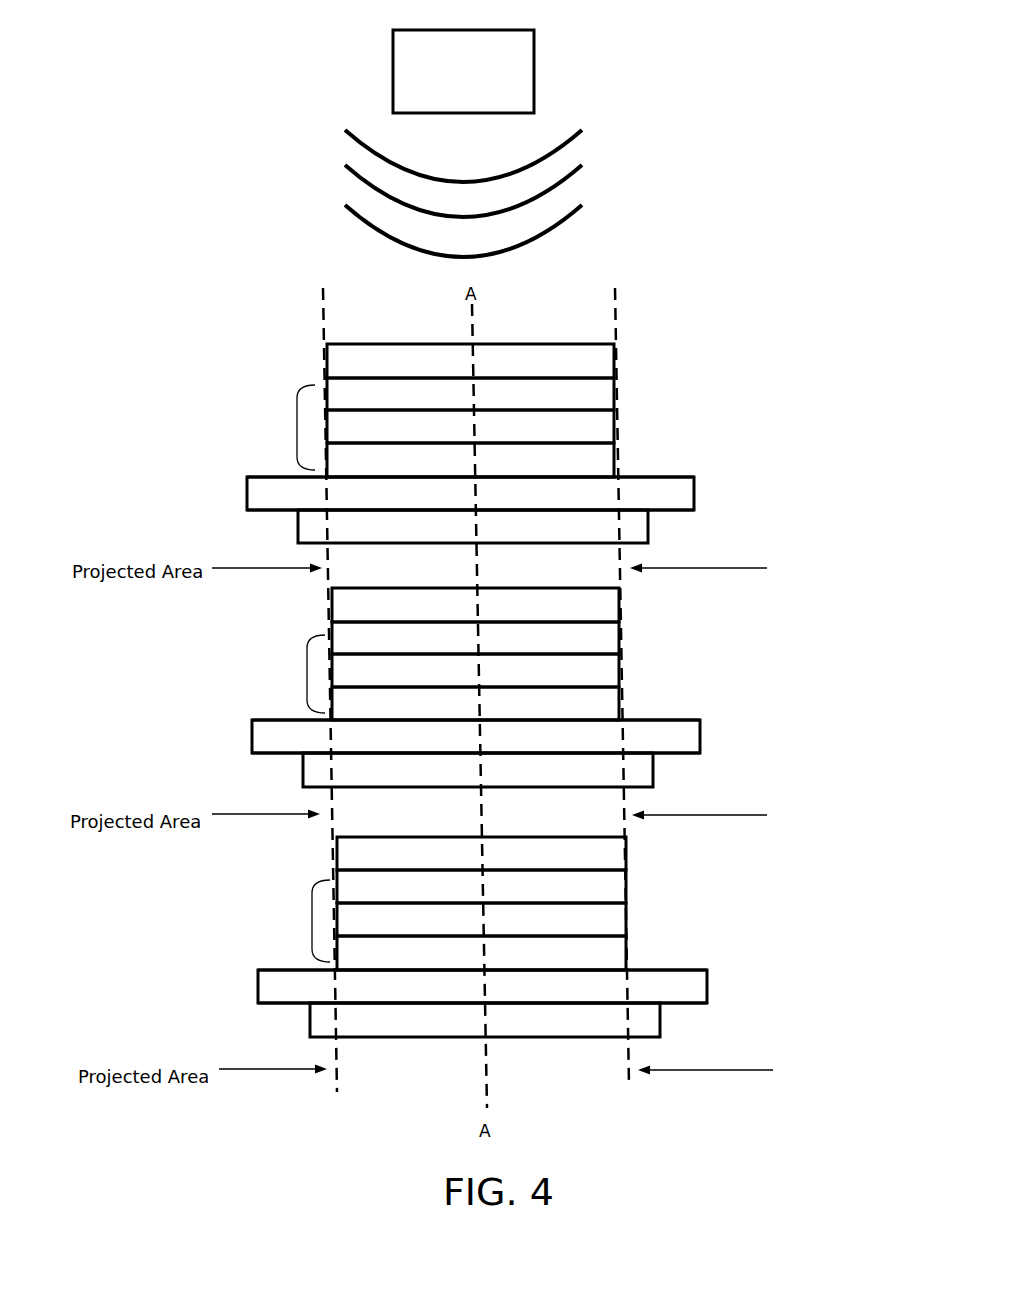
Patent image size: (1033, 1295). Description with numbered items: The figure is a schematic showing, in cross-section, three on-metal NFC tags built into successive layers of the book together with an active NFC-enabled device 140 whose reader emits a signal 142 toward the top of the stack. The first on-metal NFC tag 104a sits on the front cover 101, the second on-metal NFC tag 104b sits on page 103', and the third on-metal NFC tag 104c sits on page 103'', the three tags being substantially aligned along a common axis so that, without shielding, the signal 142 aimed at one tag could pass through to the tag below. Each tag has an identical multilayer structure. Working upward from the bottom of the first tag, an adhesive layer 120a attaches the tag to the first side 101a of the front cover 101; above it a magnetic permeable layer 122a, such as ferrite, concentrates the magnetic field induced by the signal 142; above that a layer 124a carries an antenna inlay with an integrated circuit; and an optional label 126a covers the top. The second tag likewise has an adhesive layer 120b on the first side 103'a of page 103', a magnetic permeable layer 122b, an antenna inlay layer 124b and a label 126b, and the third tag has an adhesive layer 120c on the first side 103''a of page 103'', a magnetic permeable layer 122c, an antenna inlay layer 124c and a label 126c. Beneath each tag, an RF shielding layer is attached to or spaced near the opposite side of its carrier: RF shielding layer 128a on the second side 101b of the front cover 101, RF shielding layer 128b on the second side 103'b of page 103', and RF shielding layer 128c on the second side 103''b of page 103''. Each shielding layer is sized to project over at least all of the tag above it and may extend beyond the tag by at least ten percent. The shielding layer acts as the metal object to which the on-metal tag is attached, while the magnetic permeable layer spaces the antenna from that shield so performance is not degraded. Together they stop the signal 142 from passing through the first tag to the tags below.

The active NFC-enabled device 140 is at (534, 79).
The signal 142 is at (587, 165).
The front cover 101 is at (694, 493).
The first side of the front cover 101a is at (267, 475).
The second side of the front cover 101b is at (268, 512).
The first on-metal NFC tag 104a is at (297, 412).
The adhesive layer 120a is at (615, 460).
The magnetic permeable layer 122a is at (615, 427).
The antenna inlay layer 124a is at (615, 394).
The label 126a is at (615, 361).
The RF shielding layer 128a is at (648, 527).
The page 103' is at (528, 736).
The first side of page 103'a is at (424, 690).
The second side of page 103'b is at (420, 771).
The second on-metal NFC tag 104b is at (307, 658).
The adhesive layer 120b is at (620, 703).
The magnetic permeable layer 122b is at (620, 671).
The antenna inlay layer 124b is at (620, 637).
The label 126b is at (620, 604).
The RF shielding layer 128b is at (653, 770).
The page 103'' is at (534, 986).
The first side of page 103''a is at (422, 938).
The second side of page 103''b is at (431, 1018).
The third on-metal NFC tag 104c is at (312, 905).
The adhesive layer 120c is at (626, 953).
The magnetic permeable layer 122c is at (626, 920).
The antenna inlay layer 124c is at (626, 888).
The label 126c is at (626, 853).
The RF shielding layer 128c is at (660, 1020).